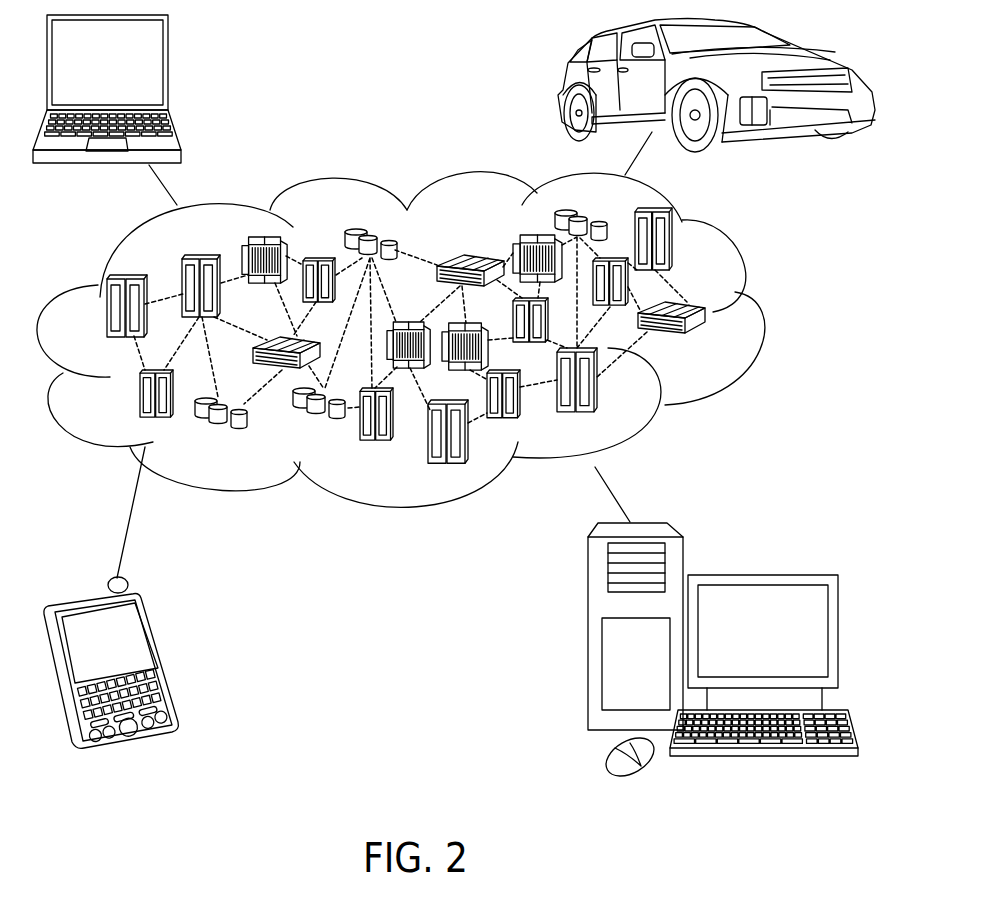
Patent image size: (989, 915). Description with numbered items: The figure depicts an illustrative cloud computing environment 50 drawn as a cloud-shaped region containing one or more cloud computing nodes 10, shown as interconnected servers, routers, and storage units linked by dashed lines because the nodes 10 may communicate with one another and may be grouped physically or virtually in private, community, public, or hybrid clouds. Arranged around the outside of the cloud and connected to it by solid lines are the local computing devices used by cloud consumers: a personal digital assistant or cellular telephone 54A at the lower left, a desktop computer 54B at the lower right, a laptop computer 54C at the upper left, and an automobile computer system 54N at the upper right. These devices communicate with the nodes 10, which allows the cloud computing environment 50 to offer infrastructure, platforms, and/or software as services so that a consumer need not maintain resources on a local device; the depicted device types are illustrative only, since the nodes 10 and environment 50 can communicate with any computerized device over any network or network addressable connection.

The cloud computing nodes 10 is at (733, 357).
The cloud computing environment 50 is at (760, 318).
The personal digital assistant or cellular telephone 54A is at (162, 660).
The desktop computer 54B is at (783, 575).
The laptop computer 54C is at (170, 62).
The automobile computer system 54N is at (563, 82).